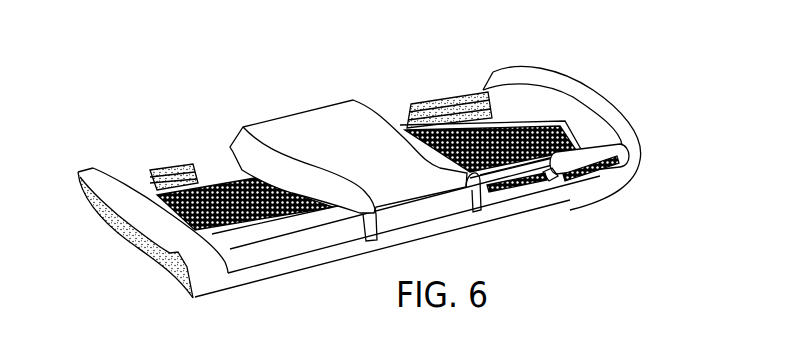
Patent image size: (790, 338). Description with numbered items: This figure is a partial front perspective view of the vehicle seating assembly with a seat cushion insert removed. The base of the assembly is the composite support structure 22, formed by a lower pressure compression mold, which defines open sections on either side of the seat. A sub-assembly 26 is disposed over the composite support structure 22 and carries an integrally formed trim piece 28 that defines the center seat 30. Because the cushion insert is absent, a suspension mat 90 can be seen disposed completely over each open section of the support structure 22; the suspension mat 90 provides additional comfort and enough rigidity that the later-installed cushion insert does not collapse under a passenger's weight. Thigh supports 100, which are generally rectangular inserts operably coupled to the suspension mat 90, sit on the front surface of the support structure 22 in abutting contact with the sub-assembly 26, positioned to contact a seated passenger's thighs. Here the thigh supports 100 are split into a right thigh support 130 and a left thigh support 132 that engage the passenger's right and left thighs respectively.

The composite support structure 22 is at (143, 259).
The sub-assembly 26 is at (423, 205).
The trim piece 28 is at (330, 143).
The center seat 30 is at (333, 123).
The suspension mat 90 is at (207, 187).
The thigh supports 100 is at (287, 248).
The right thigh support 130 is at (549, 180).
The left thigh support 132 is at (605, 157).